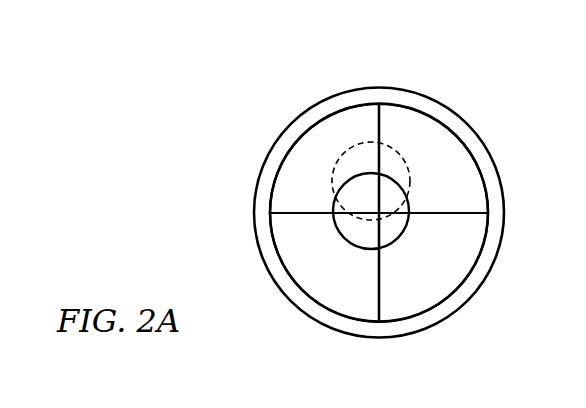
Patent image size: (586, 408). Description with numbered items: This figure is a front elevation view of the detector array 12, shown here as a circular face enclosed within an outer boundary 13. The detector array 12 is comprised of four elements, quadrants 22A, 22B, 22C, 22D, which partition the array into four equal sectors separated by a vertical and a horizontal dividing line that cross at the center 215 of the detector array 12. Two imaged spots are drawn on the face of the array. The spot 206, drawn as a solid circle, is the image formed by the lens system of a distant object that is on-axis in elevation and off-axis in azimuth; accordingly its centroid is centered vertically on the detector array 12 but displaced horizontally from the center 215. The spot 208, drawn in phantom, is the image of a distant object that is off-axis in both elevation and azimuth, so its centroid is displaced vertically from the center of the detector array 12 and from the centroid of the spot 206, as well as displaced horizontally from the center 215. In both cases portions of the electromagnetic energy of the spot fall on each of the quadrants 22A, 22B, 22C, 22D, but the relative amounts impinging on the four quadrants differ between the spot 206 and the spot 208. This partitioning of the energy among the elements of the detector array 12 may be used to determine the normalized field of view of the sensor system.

The detector array 12 is at (475, 265).
The outer wall of canister 13 is at (422, 94).
The quadrant 22A is at (323, 202).
The quadrant 22B is at (348, 278).
The quadrant 22C is at (440, 278).
The quadrant 22D is at (464, 198).
The spot 206 is at (333, 222).
The spot 208 is at (348, 152).
The center 215 is at (382, 218).